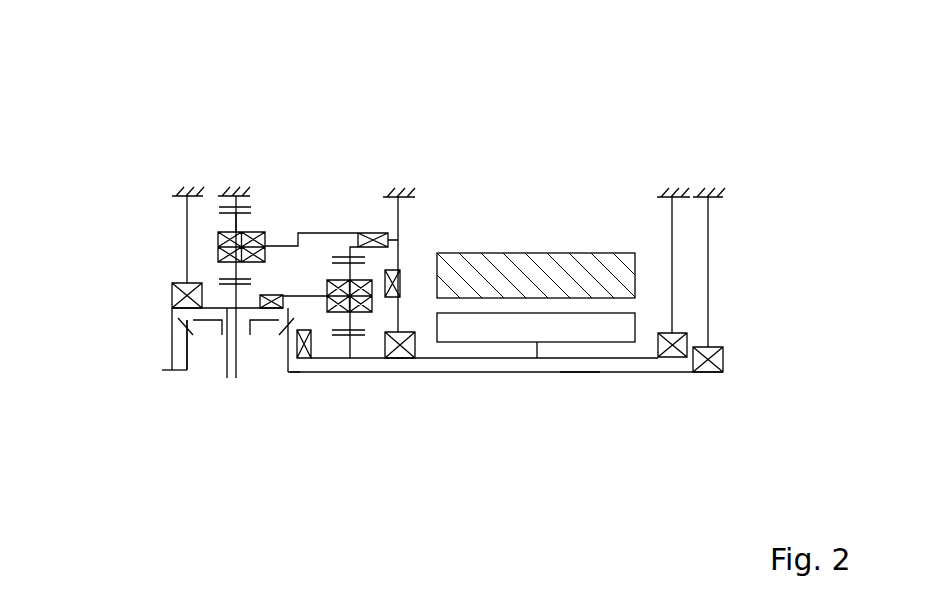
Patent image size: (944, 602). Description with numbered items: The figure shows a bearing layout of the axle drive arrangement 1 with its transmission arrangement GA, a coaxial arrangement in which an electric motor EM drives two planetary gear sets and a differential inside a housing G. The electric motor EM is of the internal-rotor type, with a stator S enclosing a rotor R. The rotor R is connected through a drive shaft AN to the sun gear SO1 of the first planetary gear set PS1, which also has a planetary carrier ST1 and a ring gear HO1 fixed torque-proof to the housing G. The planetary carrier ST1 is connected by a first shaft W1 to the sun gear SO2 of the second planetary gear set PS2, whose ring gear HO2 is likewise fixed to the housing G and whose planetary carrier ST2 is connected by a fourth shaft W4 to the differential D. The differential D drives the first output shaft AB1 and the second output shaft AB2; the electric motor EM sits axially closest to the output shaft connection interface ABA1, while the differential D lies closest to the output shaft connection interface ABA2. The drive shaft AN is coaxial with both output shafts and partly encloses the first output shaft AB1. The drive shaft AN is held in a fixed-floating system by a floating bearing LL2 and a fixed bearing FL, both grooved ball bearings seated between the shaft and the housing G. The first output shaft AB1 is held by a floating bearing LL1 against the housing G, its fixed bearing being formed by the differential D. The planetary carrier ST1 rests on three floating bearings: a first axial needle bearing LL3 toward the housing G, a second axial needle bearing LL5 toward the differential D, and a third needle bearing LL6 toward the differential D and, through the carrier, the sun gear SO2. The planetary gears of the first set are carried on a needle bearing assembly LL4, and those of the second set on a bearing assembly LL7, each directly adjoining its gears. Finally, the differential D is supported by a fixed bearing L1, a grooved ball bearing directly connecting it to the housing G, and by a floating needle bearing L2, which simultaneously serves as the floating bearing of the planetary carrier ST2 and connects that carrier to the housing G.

The axle drive arrangement 1 is at (592, 125).
The transmission arrangement GA is at (157, 122).
The housing G is at (187, 193).
The planetary carrier of the second planetary gear set ST2 is at (268, 234).
The ring gear of the first planetary gear set HO1 is at (340, 253).
The ring gear of the second planetary gear set HO2 is at (218, 213).
The floating bearing of the differential L2 is at (372, 232).
The fixed bearing of the differential L1 is at (172, 297).
The floating bearing of the first output shaft LL1 is at (725, 360).
The floating bearing of the drive shaft LL2 is at (673, 360).
The first floating bearing of the planetary carrier of the first planetary gear set LL3 is at (400, 270).
The bearing assembly of floating bearings of the planetary carrier of the first plan LL4 is at (390, 243).
The second floating bearing of the planetary carrier of the first planetary gear set LL5 is at (303, 360).
The third floating bearing of the planetary carrier of the first planetary gear set LL6 is at (283, 373).
The bearing assembly of floating bearings of the planetary carrier of the second pla LL7 is at (218, 247).
The stator S is at (572, 275).
The rotor R is at (638, 325).
The electric motor EM is at (653, 292).
The first planetary gear set PS1 is at (349, 178).
The second planetary gear set PS2 is at (235, 166).
The first shaft W1 is at (229, 378).
The fourth shaft W4 is at (217, 260).
The differential D is at (163, 343).
The output shaft connection interface of the second output shaft ABA2 is at (170, 372).
The output shaft connection interface of the first output shaft ABA1 is at (714, 374).
The second output shaft AB2 is at (186, 372).
The first output shaft AB1 is at (570, 374).
The sun gear of the first planetary gear set SO1 is at (395, 360).
The sun gear of the second planetary gear set SO2 is at (226, 350).
The planetary carrier of the first planetary gear set ST1 is at (358, 360).
The fixed bearing of the drive shaft FL is at (488, 360).
The drive shaft AN is at (556, 374).